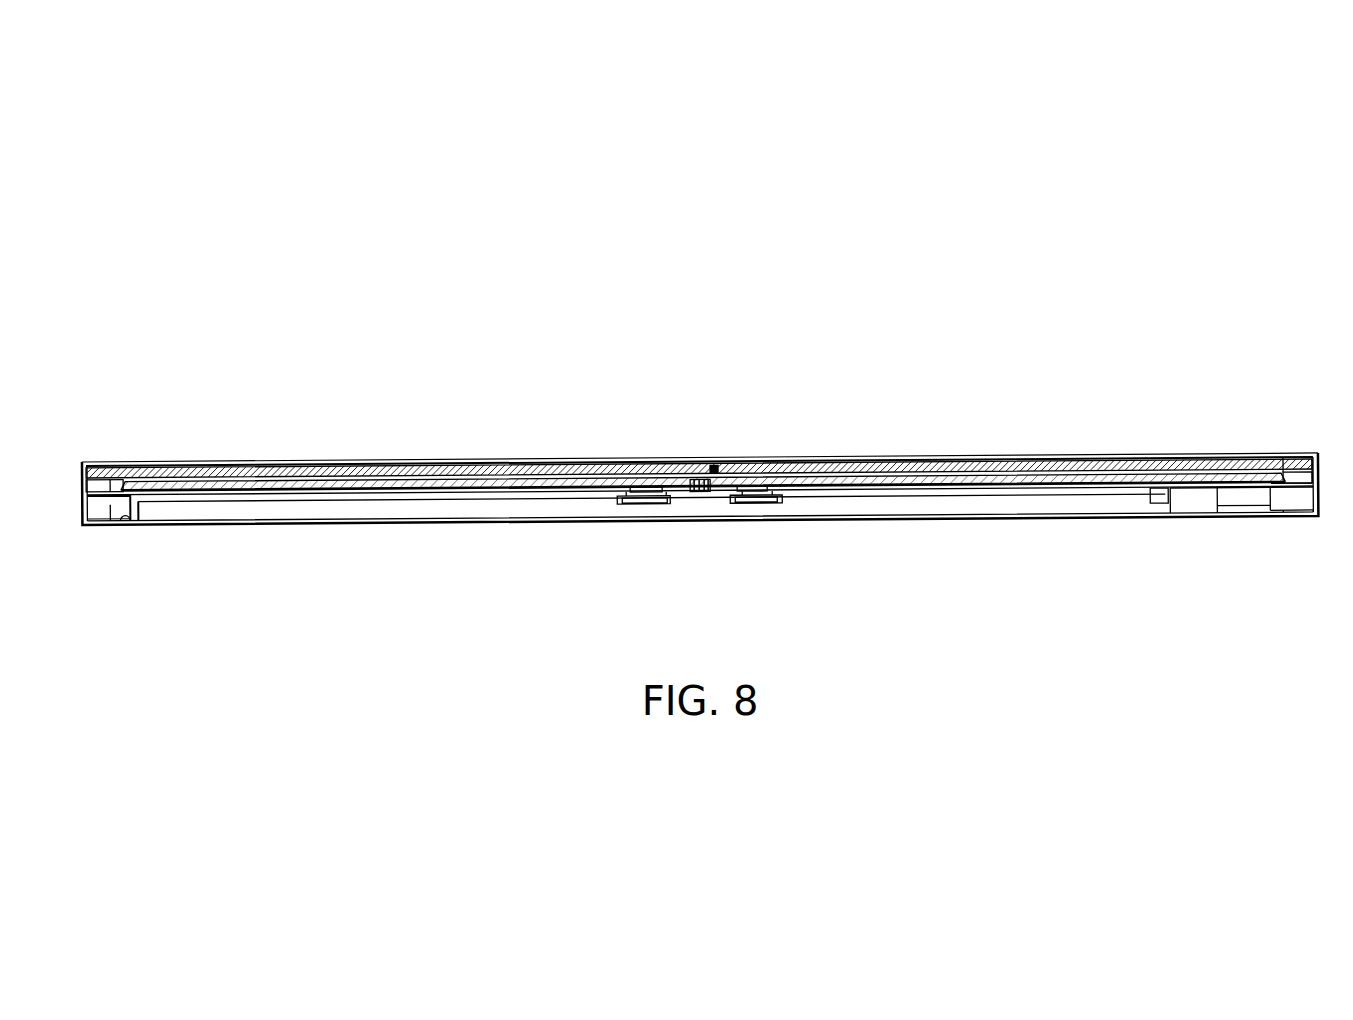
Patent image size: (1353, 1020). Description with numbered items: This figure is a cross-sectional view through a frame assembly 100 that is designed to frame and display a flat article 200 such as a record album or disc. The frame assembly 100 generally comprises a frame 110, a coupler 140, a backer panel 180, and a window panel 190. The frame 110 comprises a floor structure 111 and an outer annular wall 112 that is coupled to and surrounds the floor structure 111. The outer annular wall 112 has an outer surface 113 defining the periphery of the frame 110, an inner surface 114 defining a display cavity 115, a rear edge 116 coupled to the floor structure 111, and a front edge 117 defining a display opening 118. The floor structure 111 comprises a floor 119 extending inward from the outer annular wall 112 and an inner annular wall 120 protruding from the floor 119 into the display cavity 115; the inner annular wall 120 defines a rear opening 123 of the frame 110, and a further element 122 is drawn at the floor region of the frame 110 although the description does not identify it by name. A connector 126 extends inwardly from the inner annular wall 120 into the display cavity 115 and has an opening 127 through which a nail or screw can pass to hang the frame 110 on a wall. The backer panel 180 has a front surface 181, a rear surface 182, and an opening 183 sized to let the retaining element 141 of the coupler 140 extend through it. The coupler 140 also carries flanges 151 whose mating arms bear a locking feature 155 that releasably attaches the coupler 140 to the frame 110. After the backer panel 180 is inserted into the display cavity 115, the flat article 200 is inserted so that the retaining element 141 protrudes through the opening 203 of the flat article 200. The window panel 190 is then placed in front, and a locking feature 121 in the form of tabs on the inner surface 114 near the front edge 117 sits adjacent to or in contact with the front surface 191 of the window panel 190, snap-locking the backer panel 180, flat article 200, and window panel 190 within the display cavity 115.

The frame assembly 100 is at (205, 186).
The frame 110 is at (1320, 520).
The floor structure 111 is at (158, 522).
The outer annular wall 112 is at (72, 470).
The outer surface 113 is at (99, 512).
The inner surface 114 is at (118, 532).
The display cavity 115 is at (1271, 471).
The rear edge 116 is at (1311, 526).
The front edge 117 is at (1311, 466).
The display opening 118 is at (1264, 458).
The floor 119 is at (137, 523).
The inner annular wall 120 is at (124, 470).
The locking feature 121 is at (90, 466).
The cushion member 122 is at (127, 522).
The rear opening 123 is at (1142, 524).
The connector 126 is at (1283, 522).
The opening 127 is at (1253, 521).
The coupler 140 is at (659, 524).
The retaining element 141 is at (694, 484).
The flanges 151 is at (779, 526).
The locking feature 155 is at (634, 508).
The backer panel 180 is at (545, 497).
The front surface 181 is at (1196, 498).
The rear surface 182 is at (1230, 518).
The opening 183 is at (676, 497).
The window panel 190 is at (543, 478).
The front surface 191 is at (151, 469).
The flat article 200 is at (437, 489).
The opening 203 is at (724, 462).